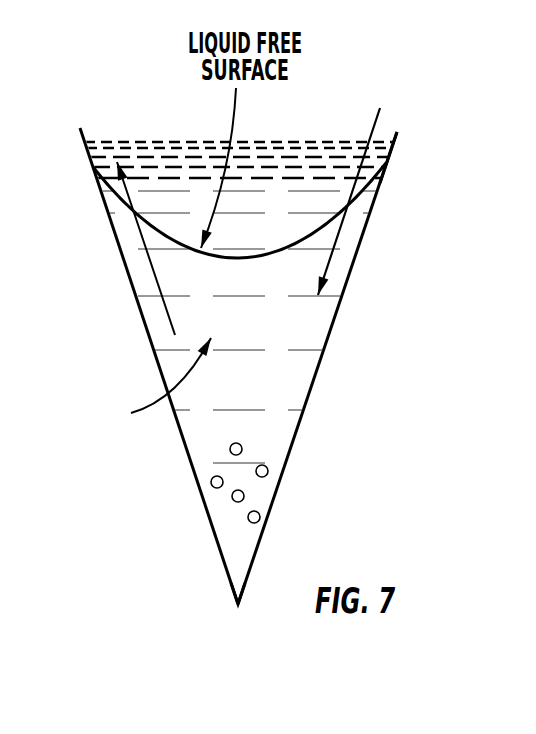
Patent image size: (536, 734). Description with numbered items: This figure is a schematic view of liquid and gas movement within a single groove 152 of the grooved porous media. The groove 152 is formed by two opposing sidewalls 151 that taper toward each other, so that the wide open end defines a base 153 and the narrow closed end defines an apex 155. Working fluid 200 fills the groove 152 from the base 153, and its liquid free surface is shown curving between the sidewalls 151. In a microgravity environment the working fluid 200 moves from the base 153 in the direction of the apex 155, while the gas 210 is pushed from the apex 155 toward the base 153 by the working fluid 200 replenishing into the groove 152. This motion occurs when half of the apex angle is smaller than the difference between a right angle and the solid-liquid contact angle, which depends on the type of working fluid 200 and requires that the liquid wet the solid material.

The opposing sidewall 151 is at (348, 278).
The groove 152 is at (152, 384).
The base 153 is at (392, 135).
The apex 155 is at (233, 598).
The working fluid 200 is at (342, 200).
The gas 210 is at (152, 267).